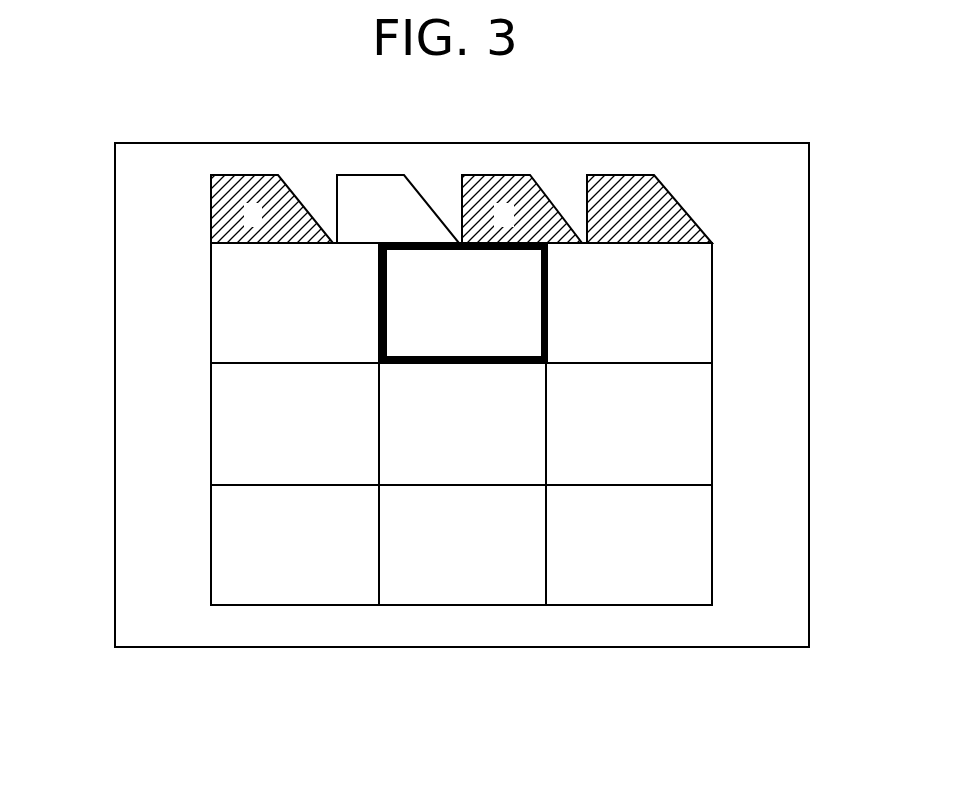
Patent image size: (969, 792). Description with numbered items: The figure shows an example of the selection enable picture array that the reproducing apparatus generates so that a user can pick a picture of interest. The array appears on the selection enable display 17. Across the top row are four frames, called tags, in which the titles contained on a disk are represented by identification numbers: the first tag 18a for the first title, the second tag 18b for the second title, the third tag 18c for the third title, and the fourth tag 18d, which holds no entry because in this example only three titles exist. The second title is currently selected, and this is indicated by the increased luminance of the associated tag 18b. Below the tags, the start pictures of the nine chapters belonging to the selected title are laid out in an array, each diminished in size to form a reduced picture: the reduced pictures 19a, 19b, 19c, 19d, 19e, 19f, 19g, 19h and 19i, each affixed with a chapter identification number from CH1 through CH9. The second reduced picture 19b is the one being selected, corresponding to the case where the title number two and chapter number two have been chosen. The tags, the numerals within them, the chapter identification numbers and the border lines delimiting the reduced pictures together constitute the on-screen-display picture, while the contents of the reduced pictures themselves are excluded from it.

The selection enable display 17 is at (508, 648).
The tag 18a is at (256, 176).
The tag 18b is at (379, 176).
The tag 18c is at (506, 176).
The tag 18d is at (631, 176).
The reduced picture 19a is at (211, 302).
The reduced picture 19b is at (379, 298).
The reduced picture 19c is at (713, 302).
The reduced picture 19d is at (211, 423).
The reduced picture 19e is at (379, 422).
The reduced picture 19f is at (713, 425).
The reduced picture 19g is at (211, 545).
The reduced picture 19h is at (379, 545).
The reduced picture 19i is at (713, 548).